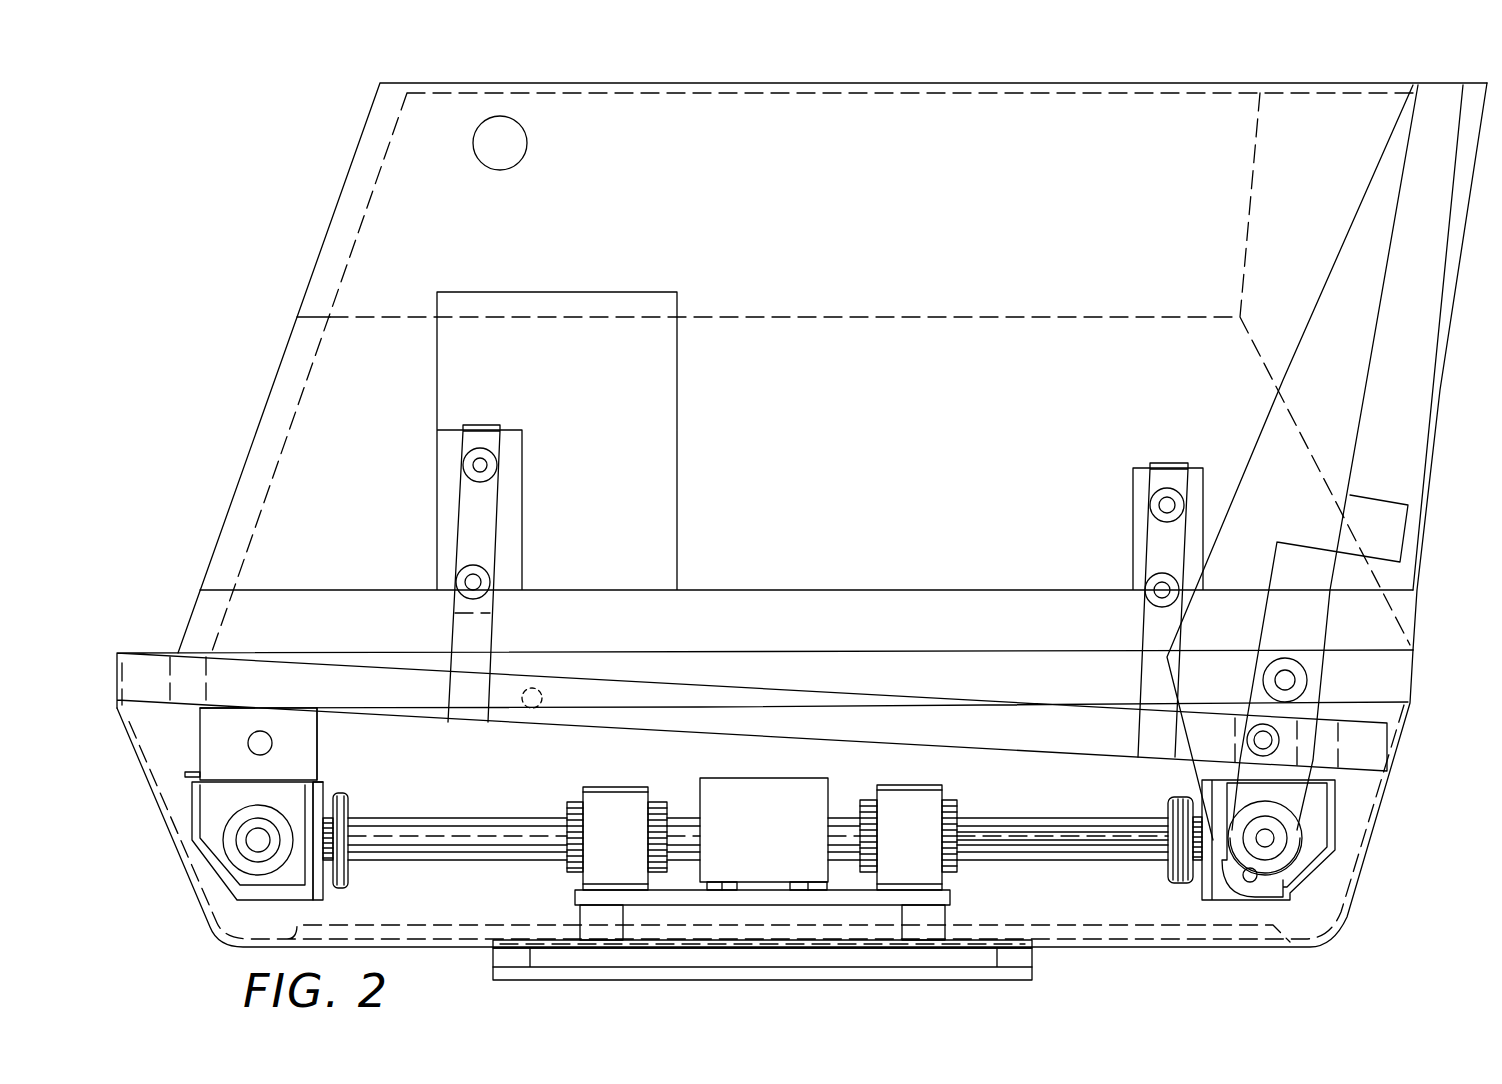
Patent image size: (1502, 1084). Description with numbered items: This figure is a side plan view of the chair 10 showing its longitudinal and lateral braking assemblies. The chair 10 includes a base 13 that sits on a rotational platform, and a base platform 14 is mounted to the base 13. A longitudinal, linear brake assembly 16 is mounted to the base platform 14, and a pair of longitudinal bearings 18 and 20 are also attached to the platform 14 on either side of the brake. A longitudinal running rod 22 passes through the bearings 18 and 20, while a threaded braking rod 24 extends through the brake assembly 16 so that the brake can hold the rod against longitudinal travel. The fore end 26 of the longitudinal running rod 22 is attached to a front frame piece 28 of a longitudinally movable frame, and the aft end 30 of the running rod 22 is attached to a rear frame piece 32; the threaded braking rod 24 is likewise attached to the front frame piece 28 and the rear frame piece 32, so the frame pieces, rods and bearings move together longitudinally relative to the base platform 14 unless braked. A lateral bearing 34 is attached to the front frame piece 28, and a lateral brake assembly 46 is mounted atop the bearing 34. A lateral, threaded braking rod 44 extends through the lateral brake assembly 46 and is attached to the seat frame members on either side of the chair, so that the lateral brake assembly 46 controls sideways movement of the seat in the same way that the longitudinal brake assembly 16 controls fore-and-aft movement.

The chair 10 is at (1387, 874).
The base 13 is at (1035, 948).
The base platform 14 is at (955, 896).
The longitudinal linear brake assembly 16 is at (812, 778).
The longitudinal bearing 18 is at (609, 787).
The longitudinal bearing 20 is at (895, 785).
The longitudinal running rod 22 is at (977, 813).
The threaded braking rod 24 is at (1028, 812).
The fore end 26 is at (333, 795).
The front frame piece 28 is at (320, 900).
The aft end 30 is at (1195, 883).
The rear frame piece 32 is at (1207, 900).
The lateral bearing 34 is at (278, 903).
The lateral threaded braking rod 44 is at (272, 742).
The lateral brake assembly 46 is at (318, 762).